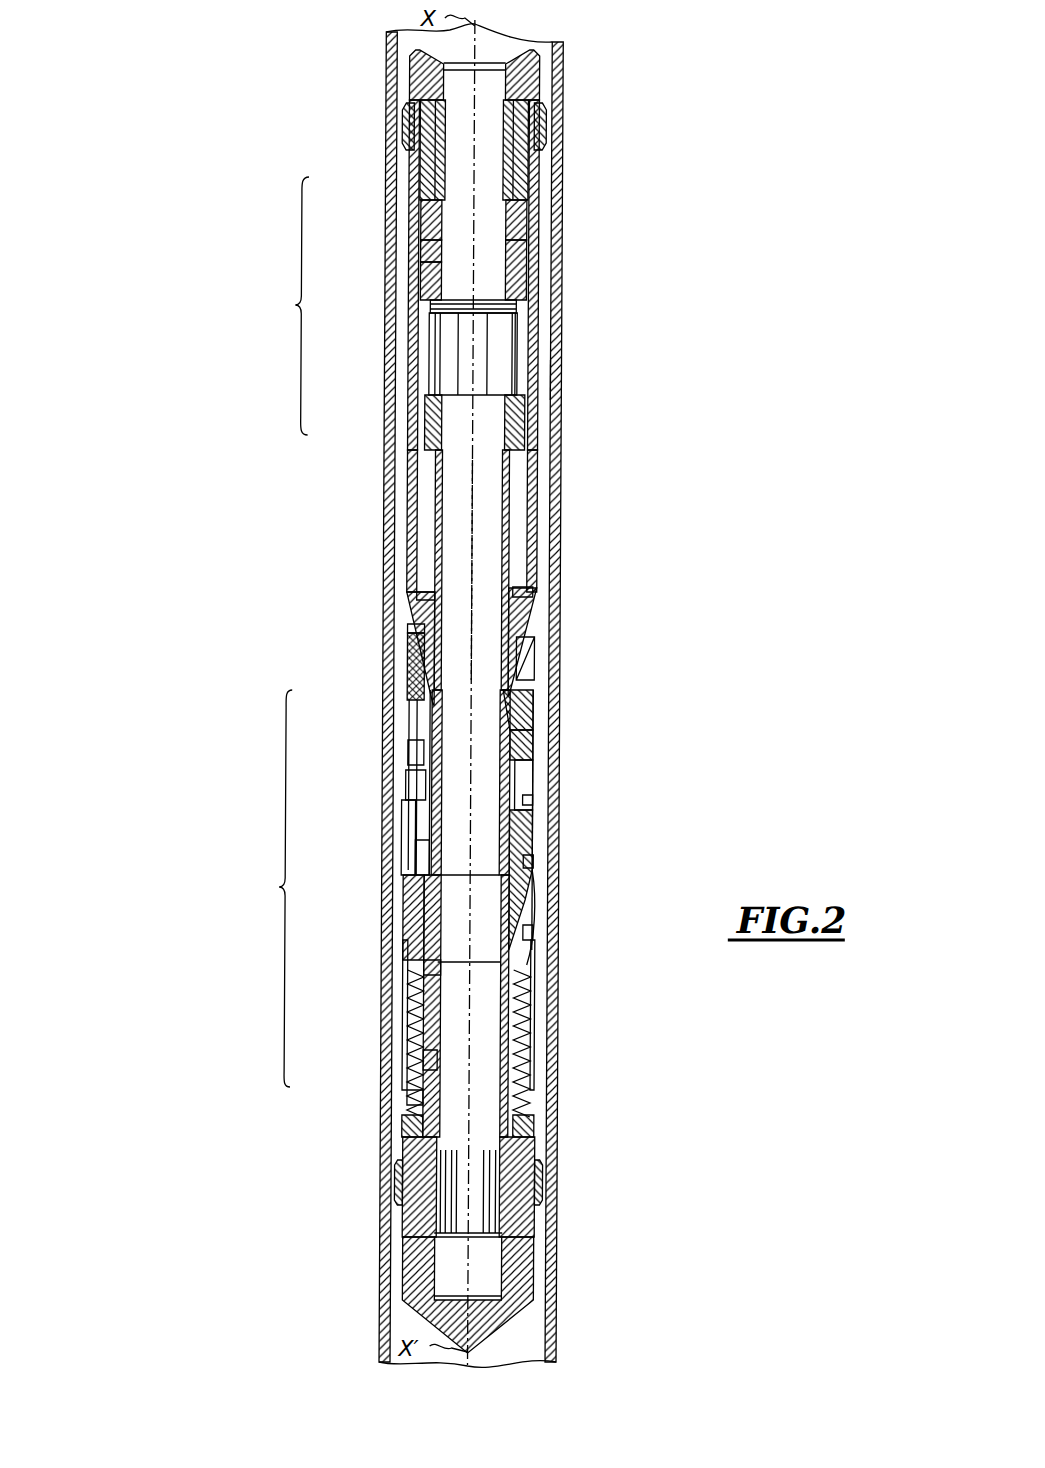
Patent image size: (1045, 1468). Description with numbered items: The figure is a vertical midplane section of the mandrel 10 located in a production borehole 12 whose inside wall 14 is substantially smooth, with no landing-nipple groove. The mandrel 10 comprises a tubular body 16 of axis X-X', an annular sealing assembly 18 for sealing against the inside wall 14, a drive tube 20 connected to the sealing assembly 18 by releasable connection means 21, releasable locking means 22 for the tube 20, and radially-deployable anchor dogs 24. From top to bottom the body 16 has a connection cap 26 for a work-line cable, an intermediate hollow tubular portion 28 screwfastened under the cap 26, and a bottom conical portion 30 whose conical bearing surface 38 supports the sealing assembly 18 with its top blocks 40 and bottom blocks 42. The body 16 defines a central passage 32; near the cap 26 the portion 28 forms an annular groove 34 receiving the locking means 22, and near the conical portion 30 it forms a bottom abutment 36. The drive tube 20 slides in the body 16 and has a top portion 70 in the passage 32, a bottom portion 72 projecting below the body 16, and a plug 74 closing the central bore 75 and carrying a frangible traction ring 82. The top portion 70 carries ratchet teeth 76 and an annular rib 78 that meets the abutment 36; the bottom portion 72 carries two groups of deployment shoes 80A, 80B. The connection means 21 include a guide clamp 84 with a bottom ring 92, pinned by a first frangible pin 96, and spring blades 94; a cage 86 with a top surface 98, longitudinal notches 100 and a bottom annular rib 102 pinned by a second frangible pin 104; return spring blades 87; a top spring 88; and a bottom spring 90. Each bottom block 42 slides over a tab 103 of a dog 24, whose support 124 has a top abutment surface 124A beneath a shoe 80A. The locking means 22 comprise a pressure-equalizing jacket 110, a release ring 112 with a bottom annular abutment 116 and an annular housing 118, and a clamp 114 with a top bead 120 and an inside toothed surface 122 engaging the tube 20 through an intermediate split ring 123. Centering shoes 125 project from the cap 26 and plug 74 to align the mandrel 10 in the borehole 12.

The mandrel 10 is at (208, 375).
The production borehole 12 is at (386, 47).
The inside wall 14 is at (563, 382).
The tubular body 16 is at (541, 345).
The annular sealing assembly 18 is at (544, 724).
The drive tube 20 is at (513, 496).
The releasable connection means 21 is at (264, 888).
The releasable locking means 22 is at (282, 306).
The anchor dogs 24 is at (541, 880).
The connection cap 26 is at (540, 66).
The intermediate hollow tubular portion 28 is at (540, 308).
The bottom conical portion 30 is at (525, 618).
The central passage 32 is at (450, 80).
The annular groove 34 is at (531, 268).
The bottom abutment 36 is at (533, 579).
The conical bearing surface 38 is at (414, 632).
The top blocks 40 is at (412, 668).
The bottom blocks 42 is at (530, 710).
The top portion 70 is at (538, 468).
The bottom portion 72 is at (423, 752).
The plug 74 is at (410, 1262).
The hollow central bore 75 is at (490, 538).
The ratchet teeth 76 is at (414, 490).
The annular rib 78 is at (422, 600).
The deployment shoes 80A is at (538, 910).
The deployment shoes 80B is at (550, 952).
The frangible traction ring 82 is at (535, 1228).
The guide clamp 84 is at (412, 806).
The cage 86 is at (415, 852).
The spring blades 87 is at (532, 800).
The top spring 88 is at (424, 1030).
The bottom spring 90 is at (414, 1118).
The bottom ring 92 is at (414, 960).
The spring blades 94 is at (423, 792).
The first frangible pin 96 is at (432, 975).
The top surface 98 is at (528, 766).
The longitudinal notches 100 is at (533, 830).
The bottom annular rib 102 is at (430, 1060).
The tab 103 is at (530, 745).
The second frangible pin 104 is at (420, 1098).
The pressure-equalizing jacket 110 is at (426, 162).
The release ring 112 is at (537, 213).
The locking clamp 114 is at (430, 322).
The bottom annular abutment 116 is at (424, 208).
The annular housing 118 is at (428, 246).
The top bead 120 is at (428, 275).
The inside toothed surface 122 is at (427, 432).
The intermediate split ring 123 is at (530, 440).
The support 124 is at (533, 860).
The top abutment surfaces 124A is at (538, 930).
The centering shoes 125 is at (404, 128).